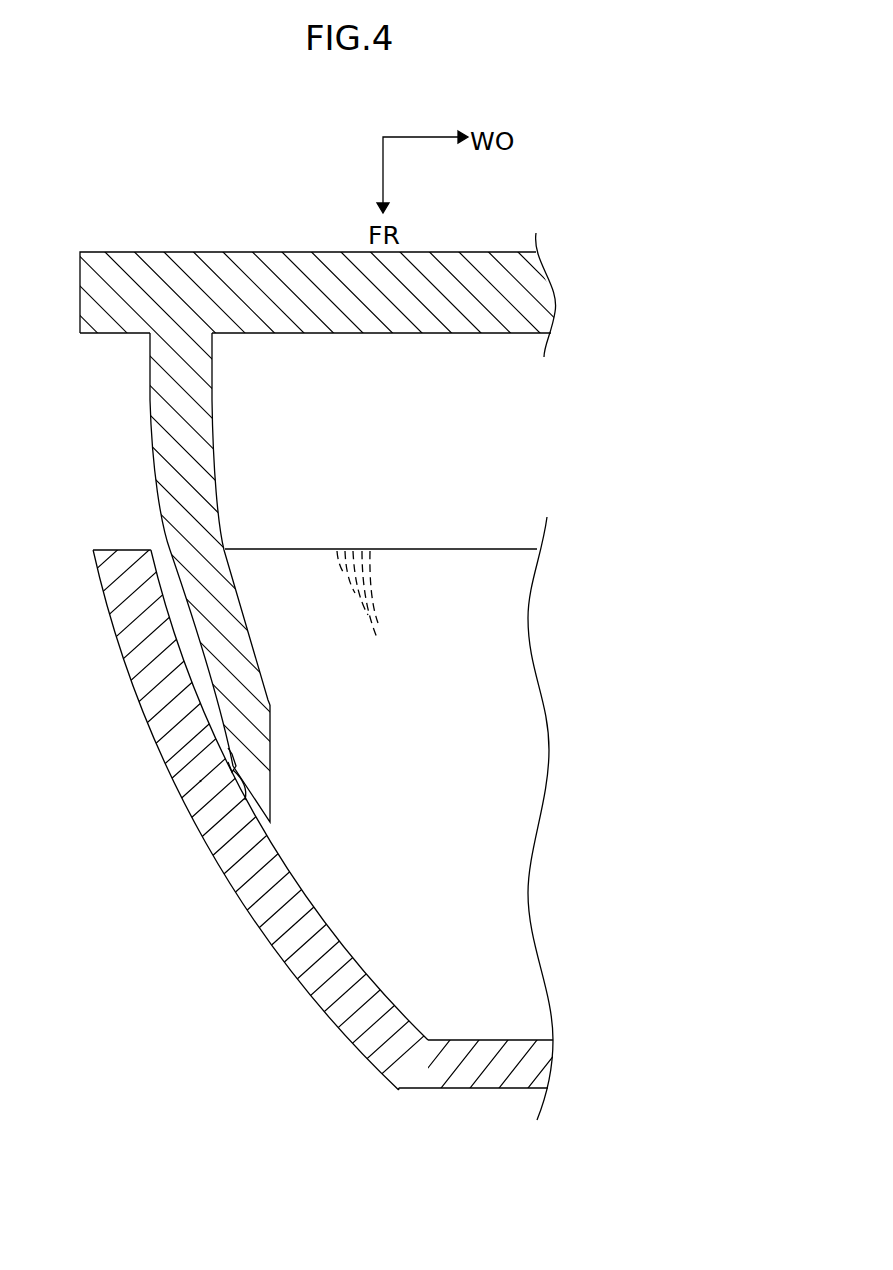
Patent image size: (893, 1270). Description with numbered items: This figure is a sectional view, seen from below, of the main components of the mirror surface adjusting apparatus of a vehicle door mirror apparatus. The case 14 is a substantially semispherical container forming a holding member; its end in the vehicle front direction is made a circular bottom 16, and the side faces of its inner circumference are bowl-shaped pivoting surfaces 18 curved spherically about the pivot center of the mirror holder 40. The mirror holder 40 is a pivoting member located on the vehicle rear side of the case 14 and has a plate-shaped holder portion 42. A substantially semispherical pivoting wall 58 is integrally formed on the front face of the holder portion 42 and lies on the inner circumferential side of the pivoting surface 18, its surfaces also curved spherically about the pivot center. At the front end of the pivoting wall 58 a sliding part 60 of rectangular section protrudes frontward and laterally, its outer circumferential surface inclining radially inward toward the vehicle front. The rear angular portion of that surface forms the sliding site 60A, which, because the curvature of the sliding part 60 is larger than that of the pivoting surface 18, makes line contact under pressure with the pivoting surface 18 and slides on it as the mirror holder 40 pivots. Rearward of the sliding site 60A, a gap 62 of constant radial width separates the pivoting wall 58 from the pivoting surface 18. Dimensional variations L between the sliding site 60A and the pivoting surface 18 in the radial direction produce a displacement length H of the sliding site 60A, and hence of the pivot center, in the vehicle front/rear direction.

The case 14 is at (398, 1090).
The bottom 16 is at (476, 1040).
The pivoting surface 18 is at (354, 950).
The mirror holder 40 is at (80, 250).
The holder portion 42 is at (295, 252).
The pivoting wall 58 is at (151, 446).
The sliding part 60 is at (268, 820).
The sliding site 60A is at (230, 762).
The gap 62 is at (160, 560).
The displacement length H is at (228, 748).
The dimensional variations L is at (232, 768).